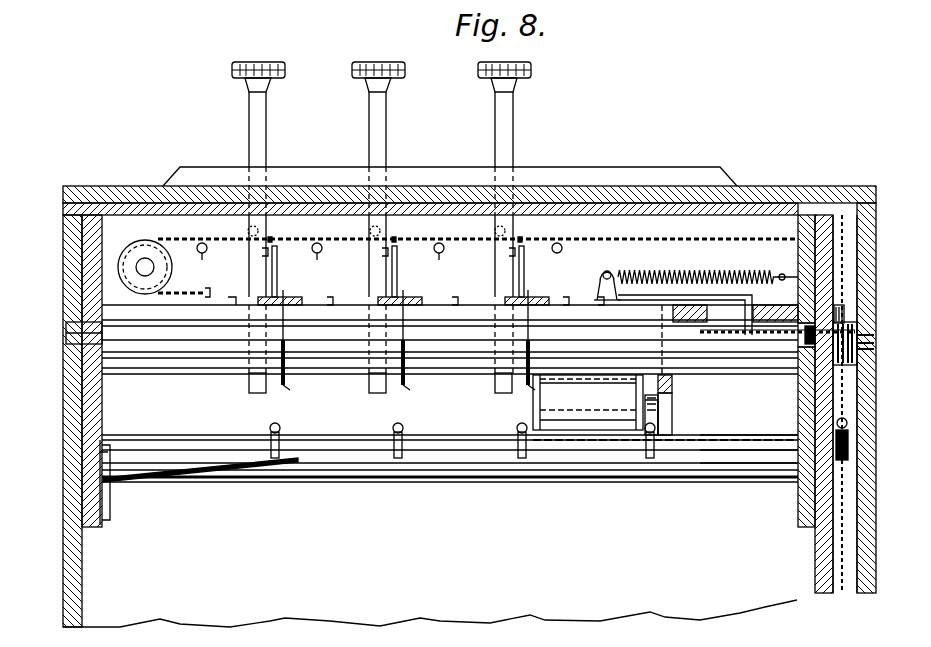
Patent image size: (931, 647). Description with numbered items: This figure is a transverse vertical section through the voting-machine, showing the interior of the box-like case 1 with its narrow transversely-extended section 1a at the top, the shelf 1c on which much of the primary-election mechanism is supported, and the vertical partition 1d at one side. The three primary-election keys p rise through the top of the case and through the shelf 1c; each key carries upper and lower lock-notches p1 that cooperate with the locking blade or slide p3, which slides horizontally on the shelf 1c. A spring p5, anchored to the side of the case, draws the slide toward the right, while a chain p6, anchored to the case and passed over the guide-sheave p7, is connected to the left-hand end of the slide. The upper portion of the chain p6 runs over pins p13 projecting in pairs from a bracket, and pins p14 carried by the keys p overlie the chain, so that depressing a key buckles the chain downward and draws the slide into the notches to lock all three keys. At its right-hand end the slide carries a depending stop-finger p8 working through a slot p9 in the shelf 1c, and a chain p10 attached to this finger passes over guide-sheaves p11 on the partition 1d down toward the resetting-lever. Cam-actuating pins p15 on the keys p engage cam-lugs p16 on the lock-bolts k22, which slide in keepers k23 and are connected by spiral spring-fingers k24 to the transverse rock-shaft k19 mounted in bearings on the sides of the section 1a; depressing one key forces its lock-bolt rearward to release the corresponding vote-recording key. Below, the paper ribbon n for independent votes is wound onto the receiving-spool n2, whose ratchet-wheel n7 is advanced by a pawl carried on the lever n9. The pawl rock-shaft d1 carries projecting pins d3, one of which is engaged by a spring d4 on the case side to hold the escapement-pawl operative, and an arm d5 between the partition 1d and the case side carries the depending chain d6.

The box-like case 1 is at (280, 602).
The transversely-extended section 1a is at (795, 190).
The shelf 1c is at (172, 312).
The vertical partition 1d is at (827, 538).
The primary-election keys p is at (375, 139).
The lock-notches p1 is at (262, 298).
The locking blade or slide p3 is at (563, 298).
The spring p5 is at (680, 272).
The chain p6 is at (626, 215).
The guide-sheave p7 is at (120, 262).
The stop-finger p8 is at (753, 340).
The slot p9 is at (722, 315).
The chain p10 is at (830, 386).
The guide-sheaves p11 is at (843, 322).
The pins or studs p13 is at (369, 259).
The pins p14 is at (248, 234).
The cam-actuating pins p15 is at (273, 240).
The cam-lugs p16 is at (277, 282).
The rock-shaft k19 is at (210, 362).
The lock-bolts k22 is at (273, 306).
The keepers k23 is at (307, 302).
The spiral spring-fingers k24 is at (400, 378).
The paper ribbon n is at (547, 411).
The receiving-spool n2 is at (522, 438).
The ratchet-wheel n7 is at (668, 422).
The lever n9 is at (673, 385).
The rock-shaft d1 is at (427, 470).
The projecting pins or rods d3 is at (290, 433).
The spring d4 is at (212, 468).
The arm d5 is at (812, 463).
The chain or flexible connection d6 is at (838, 562).